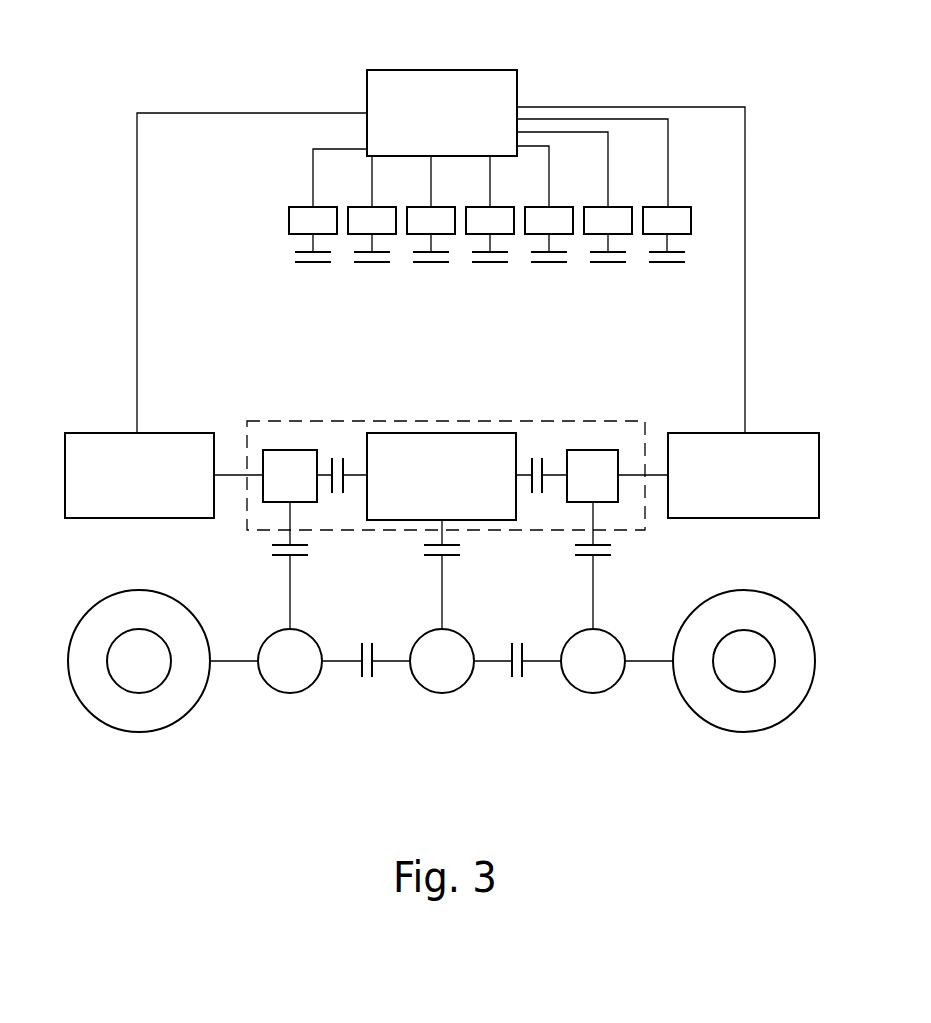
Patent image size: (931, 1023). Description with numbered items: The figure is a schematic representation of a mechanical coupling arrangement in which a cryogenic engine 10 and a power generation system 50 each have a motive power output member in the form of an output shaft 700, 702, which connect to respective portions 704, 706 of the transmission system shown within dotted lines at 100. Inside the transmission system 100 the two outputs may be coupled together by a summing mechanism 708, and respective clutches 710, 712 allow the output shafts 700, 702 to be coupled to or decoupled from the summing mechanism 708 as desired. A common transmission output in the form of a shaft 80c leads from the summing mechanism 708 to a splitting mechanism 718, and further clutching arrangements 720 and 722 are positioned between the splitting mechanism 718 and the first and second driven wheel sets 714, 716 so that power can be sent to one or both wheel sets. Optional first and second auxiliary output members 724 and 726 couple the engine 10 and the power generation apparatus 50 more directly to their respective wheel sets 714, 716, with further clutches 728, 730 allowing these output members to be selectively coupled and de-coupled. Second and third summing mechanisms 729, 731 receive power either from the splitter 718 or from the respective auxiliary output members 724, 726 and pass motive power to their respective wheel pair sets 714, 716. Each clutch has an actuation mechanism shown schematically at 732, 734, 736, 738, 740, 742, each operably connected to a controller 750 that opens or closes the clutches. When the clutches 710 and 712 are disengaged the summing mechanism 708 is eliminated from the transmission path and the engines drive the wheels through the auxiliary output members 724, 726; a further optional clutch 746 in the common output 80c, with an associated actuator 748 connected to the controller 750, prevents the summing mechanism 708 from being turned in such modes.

The controller 750 is at (478, 70).
The actuation mechanism 732 is at (305, 207).
The actuation mechanism 734 is at (364, 207).
The actuation mechanism 736 is at (423, 207).
The actuation mechanism 738 is at (482, 207).
The actuation mechanism 740 is at (541, 207).
The actuation mechanism 742 is at (600, 207).
The actuator 748 is at (660, 207).
The clutch 710 is at (313, 265).
The clutch 712 is at (372, 265).
The clutch 728 is at (431, 265).
The clutch 730 is at (490, 265).
The clutching arrangement 720 is at (549, 265).
The second driven wheel set 716 is at (608, 265).
The further clutch 746 is at (667, 265).
The cryogenic engine 10 is at (118, 442).
The power generation system 50 is at (762, 443).
The transmission system 100 is at (530, 421).
The output shaft 700 is at (240, 473).
The output shaft 702 is at (650, 473).
The portion of the transmission system 704 is at (300, 458).
The portion of the transmission system 706 is at (590, 458).
The summing mechanism 708 is at (442, 440).
The first auxiliary output member 724 is at (285, 567).
The shaft 80c is at (437, 567).
The second auxiliary output member 726 is at (600, 567).
The second summing mechanism 729 is at (290, 692).
The splitting mechanism 718 is at (462, 650).
The third summing mechanism 731 is at (593, 692).
The clutching arrangement 722 is at (517, 682).
The first driven wheel set 714 is at (140, 728).